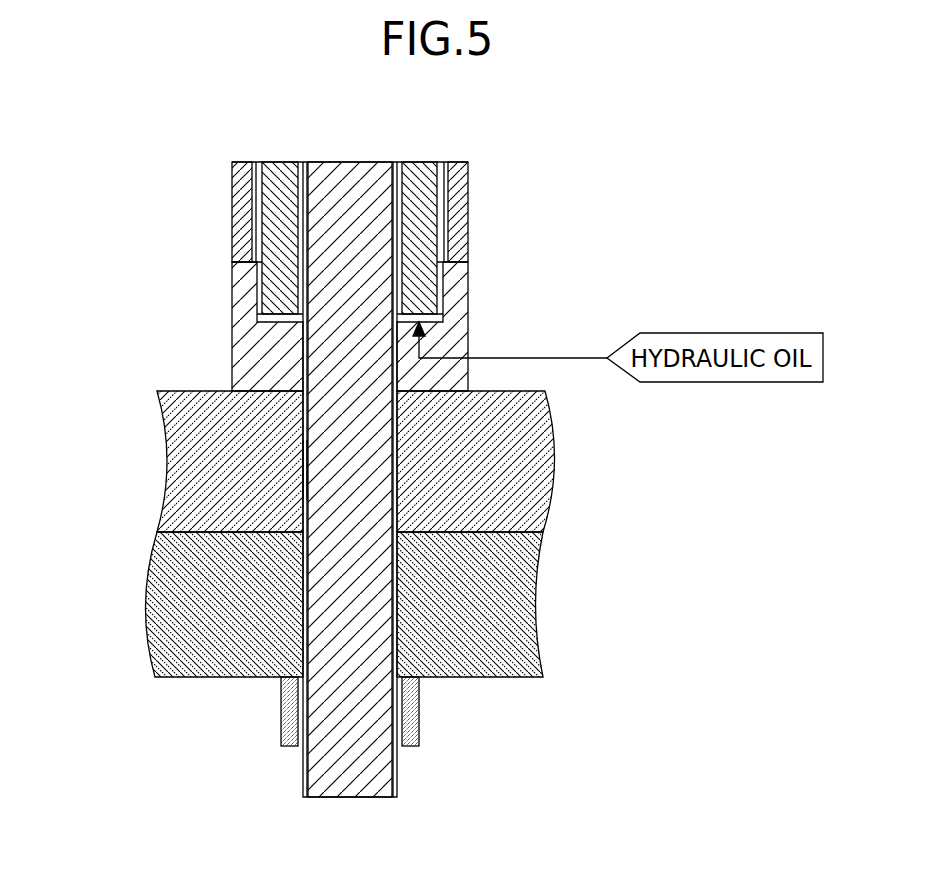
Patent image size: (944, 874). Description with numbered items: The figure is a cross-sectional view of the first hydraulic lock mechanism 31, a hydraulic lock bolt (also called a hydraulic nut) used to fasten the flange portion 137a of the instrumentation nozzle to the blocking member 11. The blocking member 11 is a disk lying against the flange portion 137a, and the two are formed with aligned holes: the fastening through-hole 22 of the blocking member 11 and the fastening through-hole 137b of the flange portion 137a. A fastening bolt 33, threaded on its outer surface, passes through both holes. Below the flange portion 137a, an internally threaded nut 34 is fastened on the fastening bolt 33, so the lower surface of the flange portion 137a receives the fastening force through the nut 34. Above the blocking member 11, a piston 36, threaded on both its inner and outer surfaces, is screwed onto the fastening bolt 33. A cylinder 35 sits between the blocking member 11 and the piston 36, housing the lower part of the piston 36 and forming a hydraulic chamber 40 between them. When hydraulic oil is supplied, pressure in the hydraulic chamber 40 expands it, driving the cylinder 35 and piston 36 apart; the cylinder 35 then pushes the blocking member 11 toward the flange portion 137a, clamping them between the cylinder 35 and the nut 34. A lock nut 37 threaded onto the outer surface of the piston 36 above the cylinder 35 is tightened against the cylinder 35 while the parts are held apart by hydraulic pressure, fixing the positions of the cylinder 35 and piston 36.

The blocking member 11 is at (535, 452).
The fastening through-hole 22 is at (312, 465).
The first hydraulic lock mechanism 31 is at (360, 248).
The fastening bolt 33 is at (350, 778).
The nut 34 is at (420, 712).
The cylinder 35 is at (470, 308).
The piston 36 is at (416, 162).
The lock nut 37 is at (241, 162).
The hydraulic chamber 40 is at (285, 318).
The flange portion 137a is at (520, 601).
The fastening through-hole 137b is at (312, 595).